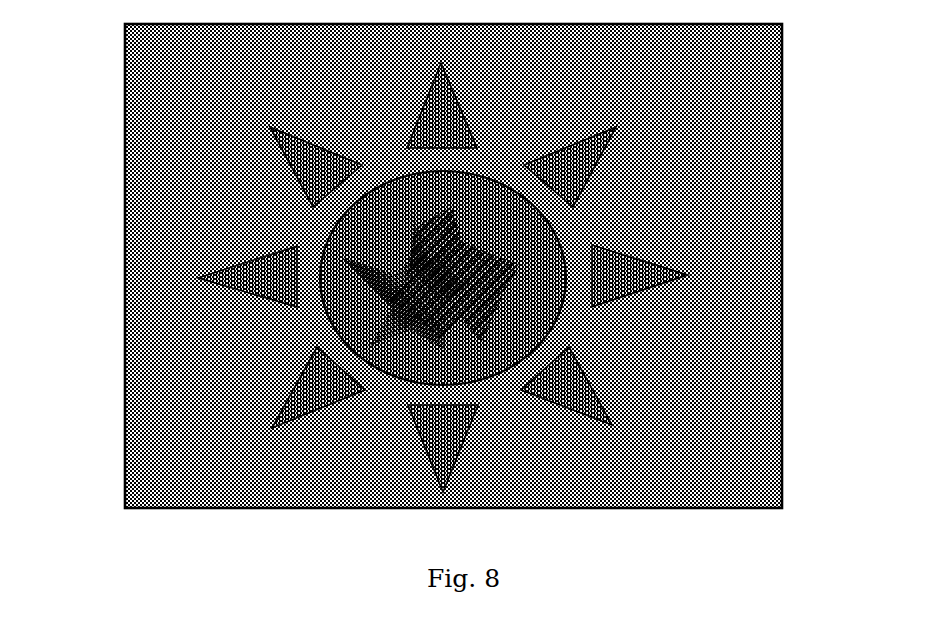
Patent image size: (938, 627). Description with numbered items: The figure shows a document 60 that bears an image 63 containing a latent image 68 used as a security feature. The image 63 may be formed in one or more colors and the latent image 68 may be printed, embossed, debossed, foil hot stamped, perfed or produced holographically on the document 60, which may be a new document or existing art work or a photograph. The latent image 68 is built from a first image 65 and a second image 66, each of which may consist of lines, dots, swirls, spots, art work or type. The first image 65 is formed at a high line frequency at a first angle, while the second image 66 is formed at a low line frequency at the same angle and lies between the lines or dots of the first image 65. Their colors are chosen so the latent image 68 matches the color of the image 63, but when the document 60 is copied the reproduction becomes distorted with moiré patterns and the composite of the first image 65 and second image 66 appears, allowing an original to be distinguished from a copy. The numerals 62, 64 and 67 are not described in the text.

The document 60 is at (178, 62).
The stippled background layer 62 is at (217, 118).
The image 63 is at (340, 225).
The first fine-hatched star region 64 is at (380, 276).
The first image 65 is at (378, 298).
The latent image 68 is at (372, 320).
The second image 66 is at (483, 300).
The upper lobe of thick-hatched region 67 is at (452, 247).